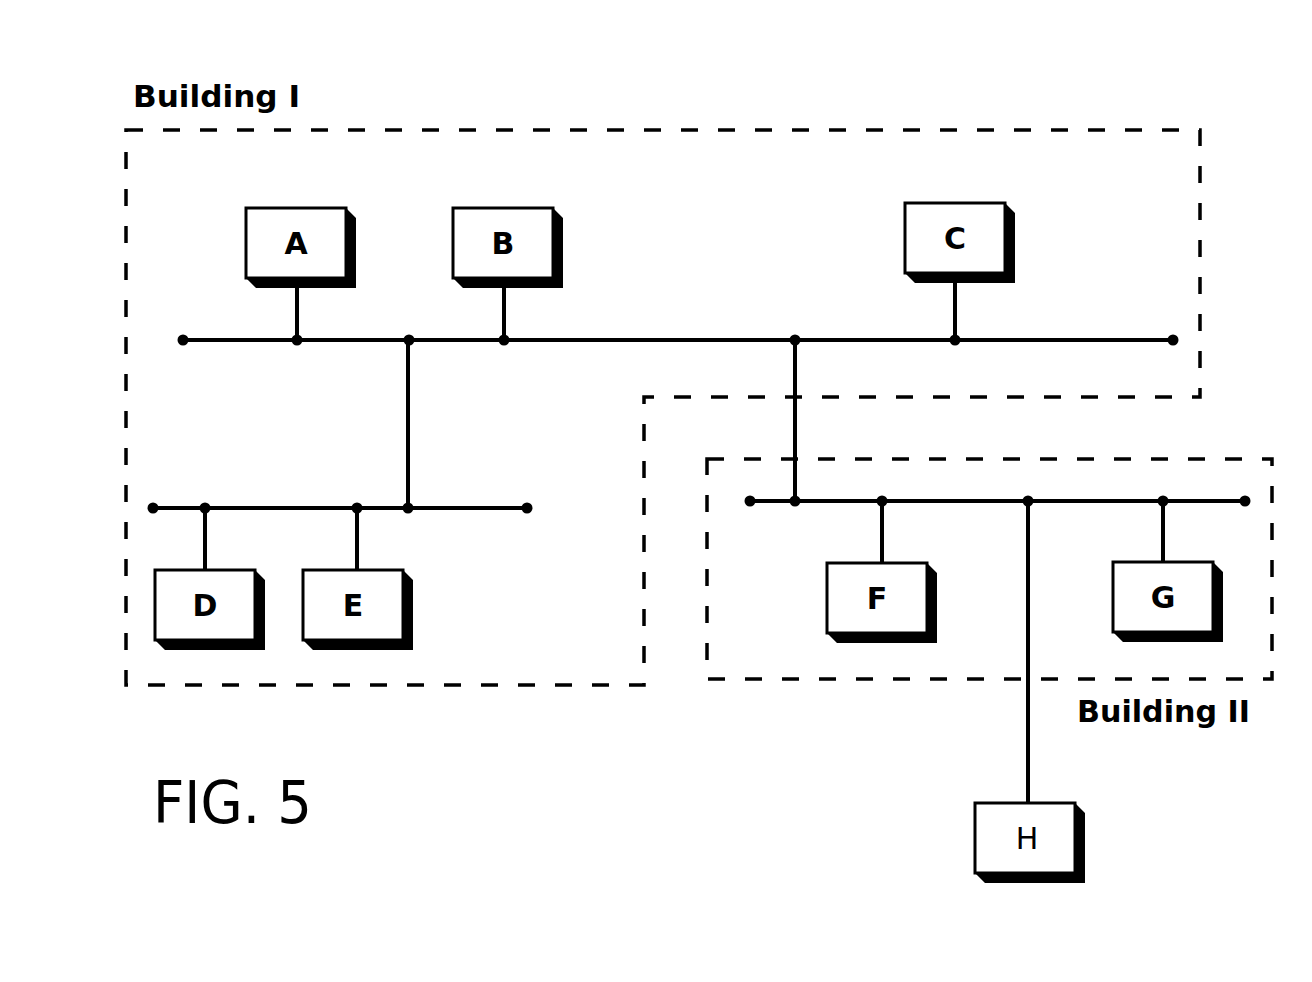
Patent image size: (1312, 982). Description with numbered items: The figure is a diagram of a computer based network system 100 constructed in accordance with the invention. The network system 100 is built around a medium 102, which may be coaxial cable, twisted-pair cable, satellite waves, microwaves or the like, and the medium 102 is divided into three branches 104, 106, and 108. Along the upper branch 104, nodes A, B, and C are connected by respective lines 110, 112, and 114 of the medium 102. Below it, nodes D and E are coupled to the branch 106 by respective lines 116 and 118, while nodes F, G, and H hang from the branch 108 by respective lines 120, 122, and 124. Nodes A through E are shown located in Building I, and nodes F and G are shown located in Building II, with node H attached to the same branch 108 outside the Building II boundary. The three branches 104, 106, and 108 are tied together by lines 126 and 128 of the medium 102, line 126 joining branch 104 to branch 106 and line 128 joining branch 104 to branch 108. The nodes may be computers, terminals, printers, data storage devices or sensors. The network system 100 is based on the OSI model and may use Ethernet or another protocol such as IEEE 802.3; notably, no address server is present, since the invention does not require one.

The network system 100 is at (1187, 108).
The medium 102 is at (709, 325).
The branch 104 is at (1088, 338).
The branch 106 is at (278, 506).
The branch 108 is at (1117, 499).
The line 110 is at (297, 312).
The line 112 is at (504, 312).
The line 114 is at (955, 303).
The line 116 is at (205, 542).
The line 118 is at (357, 542).
The line 120 is at (882, 536).
The line 122 is at (1163, 536).
The line 124 is at (1028, 740).
The line 126 is at (408, 423).
The line 128 is at (795, 427).